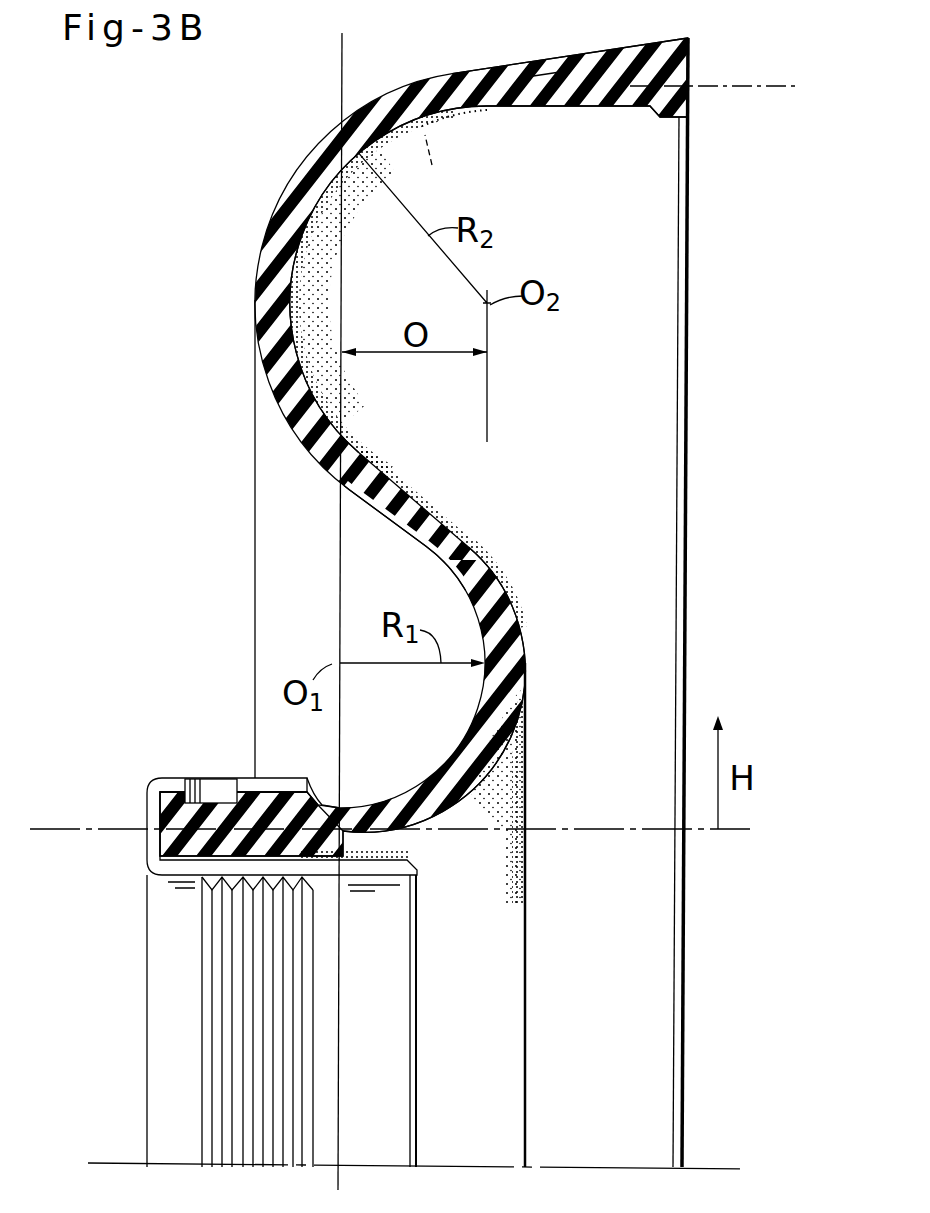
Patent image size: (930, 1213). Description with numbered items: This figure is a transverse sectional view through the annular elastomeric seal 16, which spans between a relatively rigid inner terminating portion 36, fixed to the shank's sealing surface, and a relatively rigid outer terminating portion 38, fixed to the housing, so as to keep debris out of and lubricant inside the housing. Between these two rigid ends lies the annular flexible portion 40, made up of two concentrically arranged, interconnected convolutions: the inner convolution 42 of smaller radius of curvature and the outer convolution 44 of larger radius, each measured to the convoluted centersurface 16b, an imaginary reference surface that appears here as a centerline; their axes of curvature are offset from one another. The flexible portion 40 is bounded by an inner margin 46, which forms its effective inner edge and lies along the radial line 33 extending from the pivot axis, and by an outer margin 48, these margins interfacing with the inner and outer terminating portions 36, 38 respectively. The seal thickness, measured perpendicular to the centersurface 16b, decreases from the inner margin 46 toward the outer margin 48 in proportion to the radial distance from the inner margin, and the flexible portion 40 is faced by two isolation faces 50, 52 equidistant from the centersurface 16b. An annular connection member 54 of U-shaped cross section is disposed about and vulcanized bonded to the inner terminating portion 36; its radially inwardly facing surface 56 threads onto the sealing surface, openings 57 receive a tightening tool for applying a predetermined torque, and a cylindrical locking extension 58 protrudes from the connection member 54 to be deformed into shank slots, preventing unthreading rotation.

The annular elastomeric seal 16 is at (430, 835).
The convoluted centersurface 16b is at (455, 166).
The radial line 33 is at (343, 62).
The inner terminating portion 36 is at (162, 818).
The outer terminating portion 38 is at (622, 58).
The flexible portion 40 is at (243, 258).
The inner convolution 42 is at (524, 670).
The outer convolution 44 is at (311, 217).
The inner margin 46 is at (336, 812).
The outer margin 48 is at (496, 80).
The isolation face 50 is at (407, 528).
The isolation face 52 is at (384, 468).
The connection member 54 is at (148, 853).
The radially inwardly facing surface 56 is at (232, 883).
The opening 57 is at (210, 793).
The cylindrical locking extension 58 is at (378, 877).